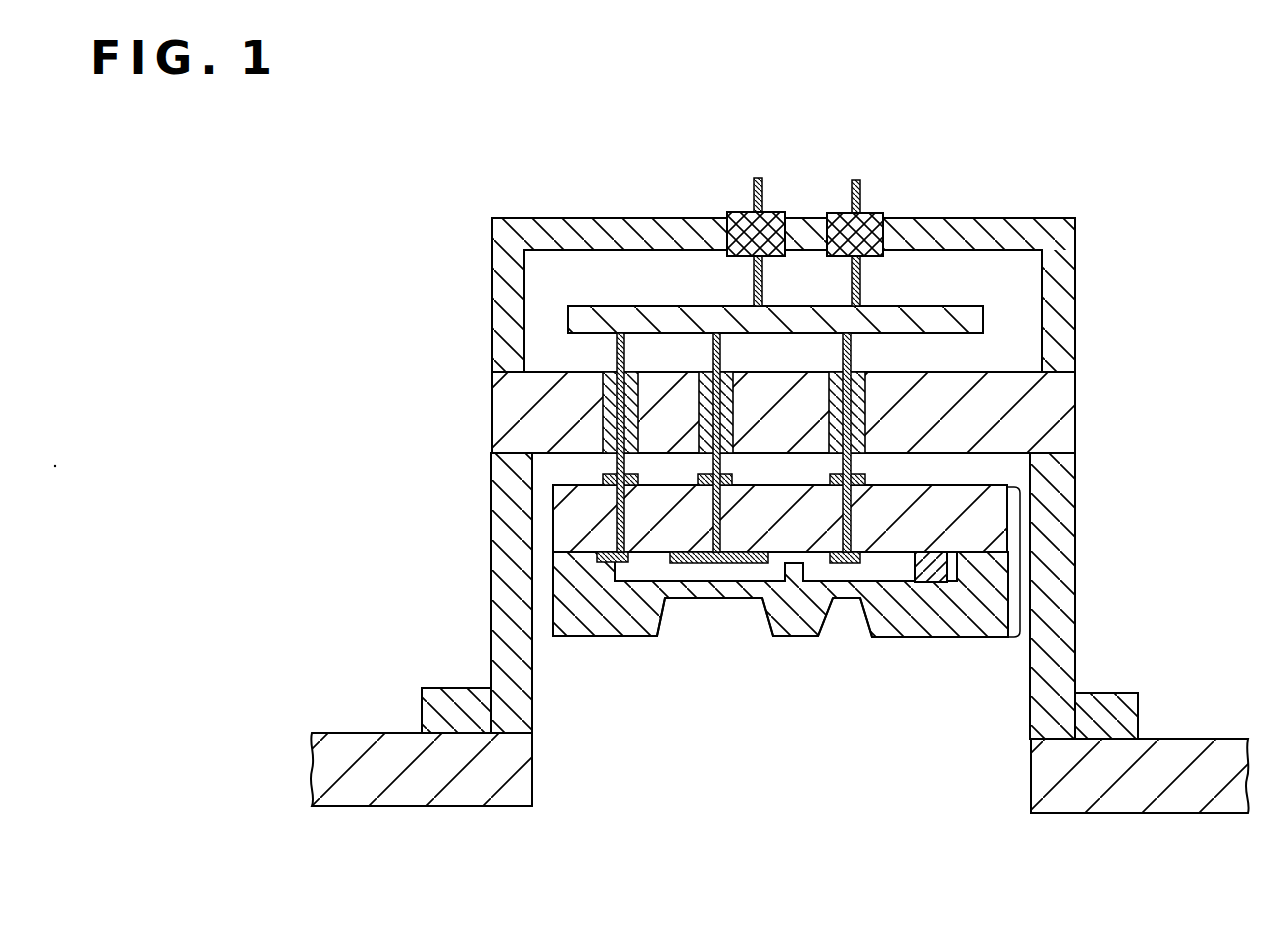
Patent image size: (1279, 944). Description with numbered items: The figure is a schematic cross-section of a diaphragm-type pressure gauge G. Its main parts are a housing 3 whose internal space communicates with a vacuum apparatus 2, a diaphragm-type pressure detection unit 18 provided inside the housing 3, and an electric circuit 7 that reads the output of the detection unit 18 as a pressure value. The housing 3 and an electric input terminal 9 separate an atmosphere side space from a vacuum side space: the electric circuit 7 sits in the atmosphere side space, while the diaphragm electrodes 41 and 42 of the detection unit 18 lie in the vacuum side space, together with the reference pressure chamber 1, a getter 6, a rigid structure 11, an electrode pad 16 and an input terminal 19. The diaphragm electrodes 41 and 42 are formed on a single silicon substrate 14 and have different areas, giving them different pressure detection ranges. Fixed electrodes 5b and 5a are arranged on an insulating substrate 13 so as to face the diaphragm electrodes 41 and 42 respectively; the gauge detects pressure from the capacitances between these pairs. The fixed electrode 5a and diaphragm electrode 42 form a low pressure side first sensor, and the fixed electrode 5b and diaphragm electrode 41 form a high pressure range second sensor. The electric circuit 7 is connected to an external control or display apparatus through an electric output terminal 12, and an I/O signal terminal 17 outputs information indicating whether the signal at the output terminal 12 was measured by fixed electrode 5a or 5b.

The diaphragm-type pressure gauge G is at (937, 76).
The reference pressure chamber 1 is at (655, 622).
The vacuum apparatus 2 is at (404, 795).
The housing 3 is at (490, 611).
The fixed electrode 5a is at (646, 570).
The fixed electrode 5b is at (866, 565).
The getter 6 is at (932, 578).
The electric circuit 7 is at (970, 318).
The electric input terminal 9 is at (851, 350).
The rigid structure 11 is at (977, 630).
The electric output terminal 12 is at (753, 190).
The insulating substrate 13 is at (565, 528).
The silicon substrate 14 is at (598, 642).
The electrode pad 16 is at (862, 481).
The I/O signal terminal 17 is at (862, 185).
The diaphragm-type pressure detection unit 18 is at (1032, 540).
The input terminal 19 is at (1060, 403).
The diaphragm electrode 41 is at (848, 590).
The diaphragm electrode 42 is at (711, 590).